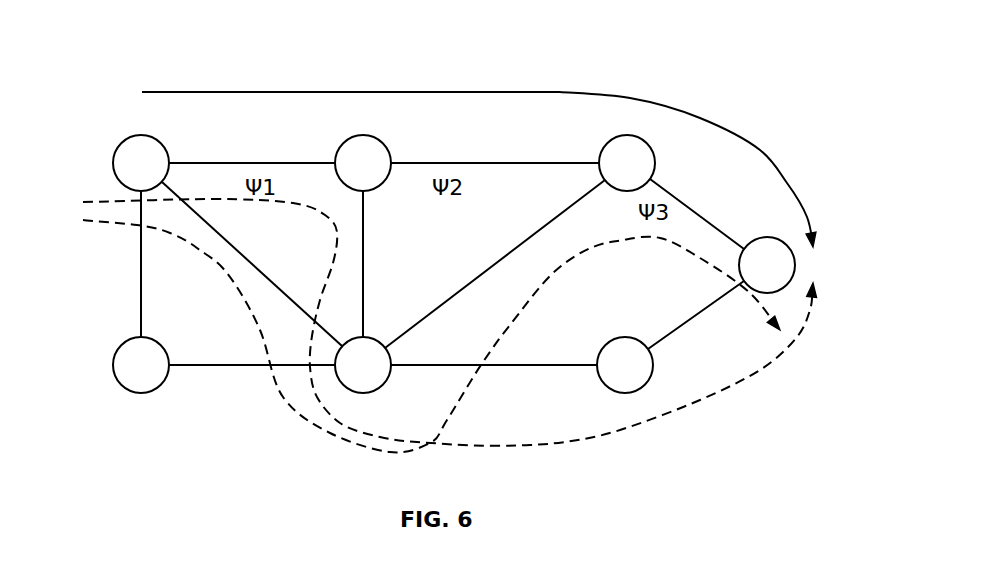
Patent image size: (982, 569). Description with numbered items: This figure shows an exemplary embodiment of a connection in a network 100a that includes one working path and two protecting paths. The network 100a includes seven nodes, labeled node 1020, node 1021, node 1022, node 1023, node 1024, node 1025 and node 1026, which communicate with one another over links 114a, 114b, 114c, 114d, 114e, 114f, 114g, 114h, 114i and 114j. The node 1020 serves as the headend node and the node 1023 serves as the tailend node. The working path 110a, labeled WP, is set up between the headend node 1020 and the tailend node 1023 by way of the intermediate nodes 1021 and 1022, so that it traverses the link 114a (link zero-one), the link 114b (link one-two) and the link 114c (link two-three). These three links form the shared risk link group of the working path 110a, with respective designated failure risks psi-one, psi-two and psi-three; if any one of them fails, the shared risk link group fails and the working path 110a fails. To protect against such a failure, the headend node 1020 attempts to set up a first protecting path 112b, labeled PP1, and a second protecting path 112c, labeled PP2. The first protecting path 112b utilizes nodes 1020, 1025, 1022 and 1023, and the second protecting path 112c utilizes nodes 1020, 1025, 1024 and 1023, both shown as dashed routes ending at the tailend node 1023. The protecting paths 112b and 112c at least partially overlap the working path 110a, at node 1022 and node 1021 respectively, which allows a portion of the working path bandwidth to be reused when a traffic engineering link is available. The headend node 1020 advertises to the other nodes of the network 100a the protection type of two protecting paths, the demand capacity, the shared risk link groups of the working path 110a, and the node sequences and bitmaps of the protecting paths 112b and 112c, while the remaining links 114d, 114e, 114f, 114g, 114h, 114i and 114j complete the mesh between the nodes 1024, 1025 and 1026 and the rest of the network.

The network 100a is at (130, 36).
The working path 110a is at (407, 91).
The working path WP is at (765, 158).
The node 1020 is at (136, 135).
The node 1021 is at (360, 135).
The node 1022 is at (622, 135).
The node 1023 is at (795, 265).
The node 1024 is at (620, 392).
The node 1025 is at (372, 336).
The node 1026 is at (150, 391).
The link 114a is at (255, 163).
The link 114b is at (470, 163).
The link 114c is at (700, 215).
The link 114d is at (680, 325).
The link 114e is at (497, 364).
The link 114f is at (560, 217).
The link 114g is at (367, 253).
The link 114h is at (230, 243).
The link 114i is at (255, 364).
The link 114j is at (140, 287).
The first protecting path 112b is at (497, 345).
The second protecting path 112c is at (548, 446).
The first protecting path PP1 is at (588, 248).
The second protecting path PP2 is at (758, 371).